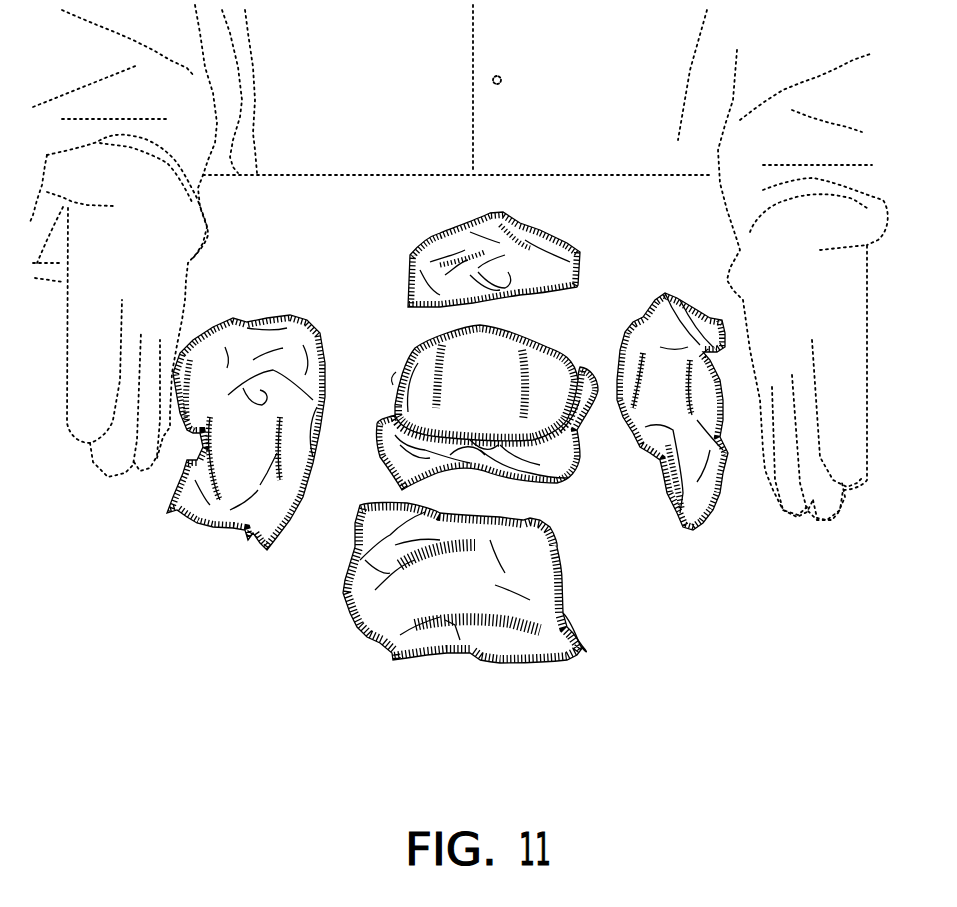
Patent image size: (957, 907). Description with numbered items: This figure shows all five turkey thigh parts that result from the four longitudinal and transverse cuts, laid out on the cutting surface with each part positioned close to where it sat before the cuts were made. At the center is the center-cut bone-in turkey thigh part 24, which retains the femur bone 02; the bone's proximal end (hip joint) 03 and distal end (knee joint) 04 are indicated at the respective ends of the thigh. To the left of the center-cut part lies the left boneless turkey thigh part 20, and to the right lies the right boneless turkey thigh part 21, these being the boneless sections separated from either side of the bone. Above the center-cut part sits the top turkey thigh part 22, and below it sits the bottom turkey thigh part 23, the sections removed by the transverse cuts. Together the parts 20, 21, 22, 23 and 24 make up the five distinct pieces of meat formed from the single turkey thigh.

The bottom turkey thigh part 23 is at (428, 245).
The distal end (knee joint) 04 is at (508, 290).
The left boneless turkey thigh part 20 is at (663, 292).
The femur bone 02 is at (468, 463).
The center-cut bone-in turkey thigh part 24 is at (567, 478).
The right boneless turkey thigh part 21 is at (267, 548).
The top turkey thigh part 22 is at (575, 632).
The proximal end (hip joint) 03 is at (447, 642).